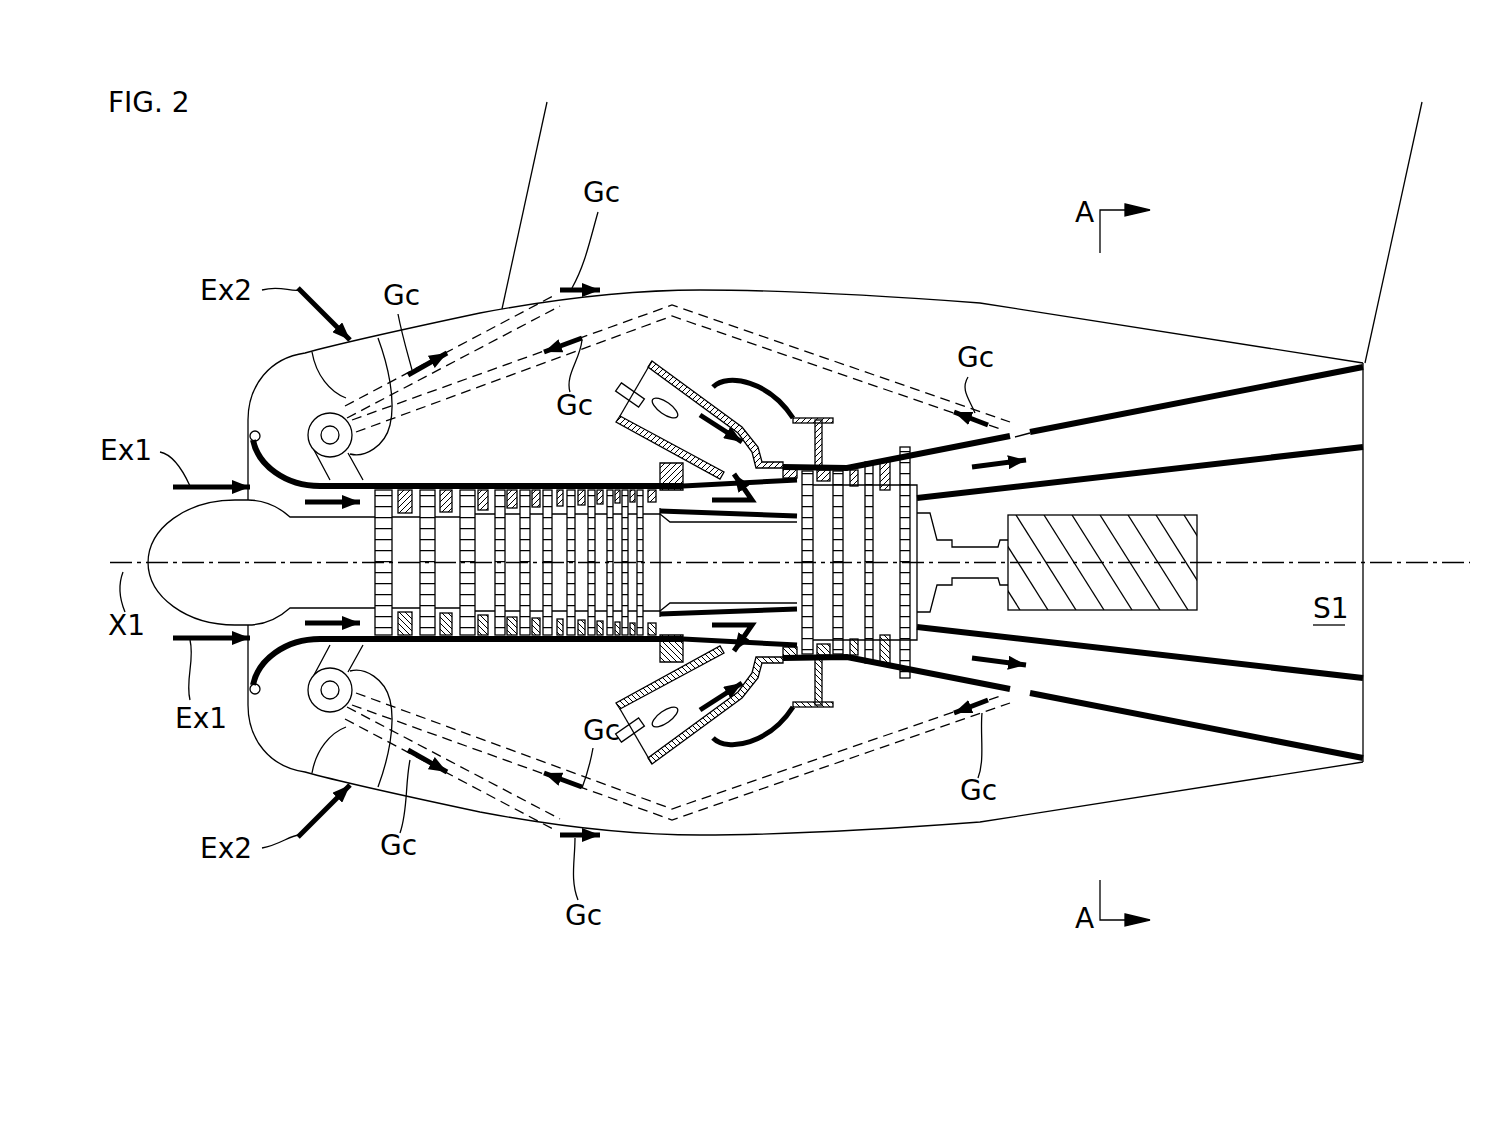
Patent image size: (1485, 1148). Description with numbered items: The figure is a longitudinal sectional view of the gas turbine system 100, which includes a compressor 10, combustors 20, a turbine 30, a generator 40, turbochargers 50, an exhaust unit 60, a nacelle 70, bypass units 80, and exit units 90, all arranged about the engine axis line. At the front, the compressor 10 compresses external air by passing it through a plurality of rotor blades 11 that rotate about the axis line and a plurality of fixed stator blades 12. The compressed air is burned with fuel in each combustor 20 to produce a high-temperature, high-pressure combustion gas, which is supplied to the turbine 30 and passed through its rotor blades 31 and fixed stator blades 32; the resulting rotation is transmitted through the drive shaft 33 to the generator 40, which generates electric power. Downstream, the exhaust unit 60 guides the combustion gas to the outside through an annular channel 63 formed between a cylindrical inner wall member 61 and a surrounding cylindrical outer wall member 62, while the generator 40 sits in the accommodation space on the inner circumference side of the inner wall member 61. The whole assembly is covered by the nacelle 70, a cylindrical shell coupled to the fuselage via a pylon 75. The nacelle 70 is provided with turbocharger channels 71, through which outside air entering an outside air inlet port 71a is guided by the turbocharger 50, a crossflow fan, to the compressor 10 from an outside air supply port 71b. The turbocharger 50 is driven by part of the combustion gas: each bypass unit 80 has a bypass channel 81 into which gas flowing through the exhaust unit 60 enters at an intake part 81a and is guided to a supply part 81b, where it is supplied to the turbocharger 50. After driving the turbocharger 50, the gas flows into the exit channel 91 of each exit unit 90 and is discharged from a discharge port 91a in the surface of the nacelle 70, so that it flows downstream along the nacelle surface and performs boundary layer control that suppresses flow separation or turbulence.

The gas turbine system 100 is at (366, 236).
The compressor 10 is at (586, 554).
The rotor blades 11 is at (430, 636).
The stator blades 12 is at (481, 636).
The combustor 20 is at (638, 356).
The turbine 30 is at (904, 560).
The rotor blades 31 is at (810, 660).
The stator blades 32 is at (827, 658).
The drive shaft 33 is at (955, 640).
The generator 40 is at (1165, 612).
The turbocharger 50 is at (305, 416).
The exhaust unit 60 is at (1158, 400).
The inner wall member 61 is at (1292, 460).
The outer wall member 62 is at (1078, 700).
The annular channel 63 is at (1062, 430).
The nacelle 70 is at (730, 289).
The turbocharger channel 71 is at (347, 392).
The outside air inlet port 71a is at (357, 341).
The outside air supply port 71b is at (330, 468).
The pylon 75 is at (1383, 289).
The bypass unit 80 is at (815, 345).
The bypass channel 81 is at (938, 405).
The intake part 81a is at (1018, 426).
The supply part 81b is at (372, 430).
The exit unit 90 is at (453, 341).
The exit channel 91 is at (500, 318).
The discharge port 91a is at (553, 291).